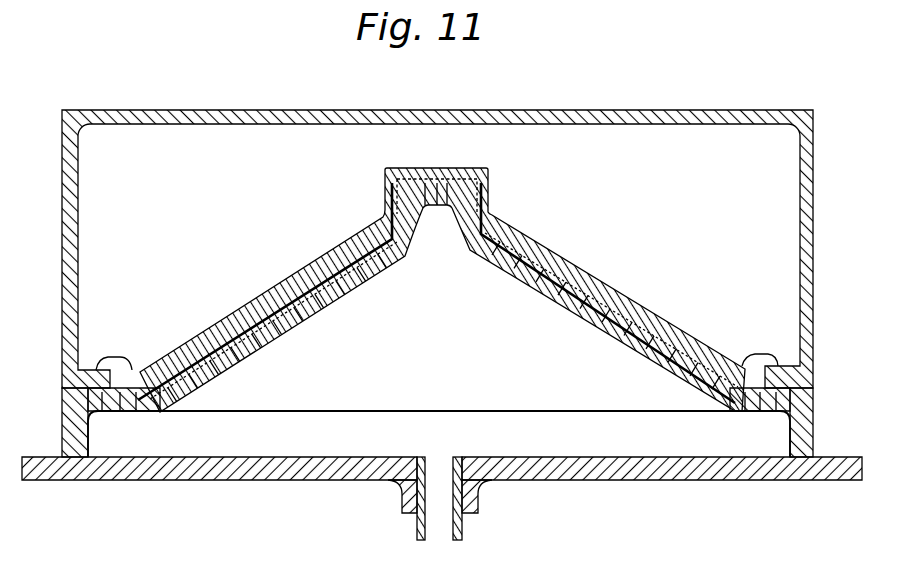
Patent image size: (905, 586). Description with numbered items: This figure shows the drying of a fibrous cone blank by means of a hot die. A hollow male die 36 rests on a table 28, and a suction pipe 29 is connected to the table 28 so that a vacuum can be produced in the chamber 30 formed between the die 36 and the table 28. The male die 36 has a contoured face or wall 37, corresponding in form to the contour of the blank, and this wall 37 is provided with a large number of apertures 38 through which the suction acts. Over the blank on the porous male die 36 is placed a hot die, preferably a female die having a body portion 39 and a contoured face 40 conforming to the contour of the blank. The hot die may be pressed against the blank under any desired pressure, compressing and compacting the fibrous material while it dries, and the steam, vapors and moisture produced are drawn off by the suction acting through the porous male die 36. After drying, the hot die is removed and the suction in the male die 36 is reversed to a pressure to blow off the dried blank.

The table 28 is at (648, 482).
The suction pipe 29 is at (447, 528).
The chamber 30 is at (439, 416).
The hollow male die 36 is at (804, 448).
The contoured face or wall 37 is at (540, 283).
The apertures 38 is at (624, 343).
The body portion 39 is at (814, 224).
The contoured face 40 is at (592, 290).